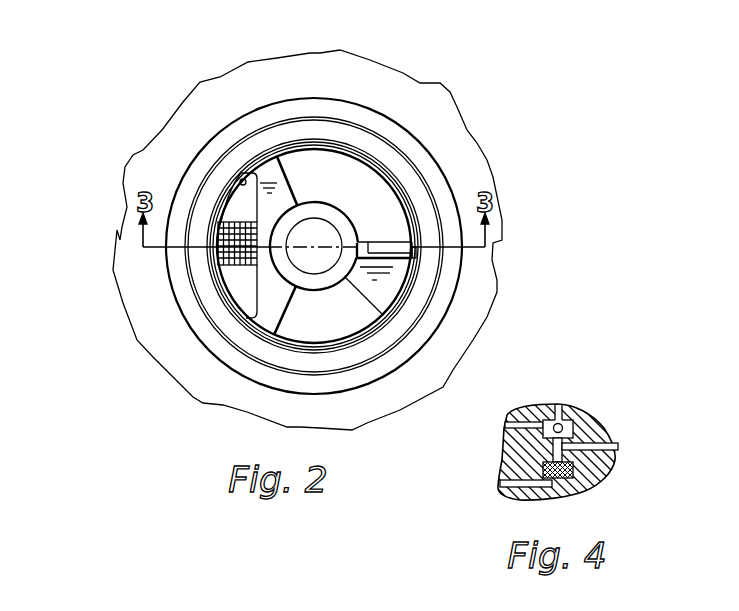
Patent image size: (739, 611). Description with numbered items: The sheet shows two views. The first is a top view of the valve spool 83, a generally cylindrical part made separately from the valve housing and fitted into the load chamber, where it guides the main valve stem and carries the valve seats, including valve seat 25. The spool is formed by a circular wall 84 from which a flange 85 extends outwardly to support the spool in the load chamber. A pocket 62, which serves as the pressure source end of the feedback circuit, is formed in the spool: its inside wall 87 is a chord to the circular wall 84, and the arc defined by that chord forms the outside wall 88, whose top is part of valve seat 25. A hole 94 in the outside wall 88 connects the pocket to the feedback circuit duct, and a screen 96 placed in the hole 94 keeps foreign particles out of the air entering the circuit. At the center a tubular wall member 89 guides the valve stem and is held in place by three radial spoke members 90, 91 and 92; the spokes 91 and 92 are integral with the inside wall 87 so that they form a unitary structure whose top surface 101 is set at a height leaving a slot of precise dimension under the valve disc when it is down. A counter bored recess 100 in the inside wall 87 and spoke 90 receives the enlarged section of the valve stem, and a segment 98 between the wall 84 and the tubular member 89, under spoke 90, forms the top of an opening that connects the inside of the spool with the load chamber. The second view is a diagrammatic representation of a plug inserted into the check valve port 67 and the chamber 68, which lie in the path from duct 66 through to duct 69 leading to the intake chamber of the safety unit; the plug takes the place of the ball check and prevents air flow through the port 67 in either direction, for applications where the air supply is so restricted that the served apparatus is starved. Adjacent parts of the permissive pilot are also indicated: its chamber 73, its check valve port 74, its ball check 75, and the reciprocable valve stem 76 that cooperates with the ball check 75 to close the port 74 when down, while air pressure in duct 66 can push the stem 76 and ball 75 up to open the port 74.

In FIG. 2, the valve seat 25 is at (345, 212).
In FIG. 2, the pocket 62 is at (240, 208).
In FIG. 2, the valve spool 83 is at (337, 98).
In FIG. 2, the wall 84 is at (222, 211).
In FIG. 2, the flange 85 is at (440, 185).
In FIG. 2, the inside wall 87 is at (254, 290).
In FIG. 2, the outside wall 88 is at (247, 173).
In FIG. 2, the tubular wall member 89 is at (338, 283).
In FIG. 2, the radial spoke member 90 is at (383, 242).
In FIG. 2, the radial spoke member 91 is at (285, 173).
In FIG. 2, the radial spoke member 92 is at (285, 313).
In FIG. 2, the hole 94 is at (220, 233).
In FIG. 2, the screen 96 is at (218, 257).
In FIG. 2, the segment 98 is at (367, 197).
In FIG. 2, the counter bored recess 100 is at (280, 288).
In FIG. 2, the top surface 101 is at (278, 202).
In FIG. 4, the duct 66 is at (610, 450).
In FIG. 4, the check valve port 67 is at (603, 467).
In FIG. 4, the chamber 68 is at (580, 477).
In FIG. 4, the duct 69 is at (500, 483).
In FIG. 4, the chamber 73 is at (573, 420).
In FIG. 4, the check valve port 74 is at (510, 437).
In FIG. 4, the ball check 75 is at (550, 414).
In FIG. 4, the valve stem 76 is at (559, 408).